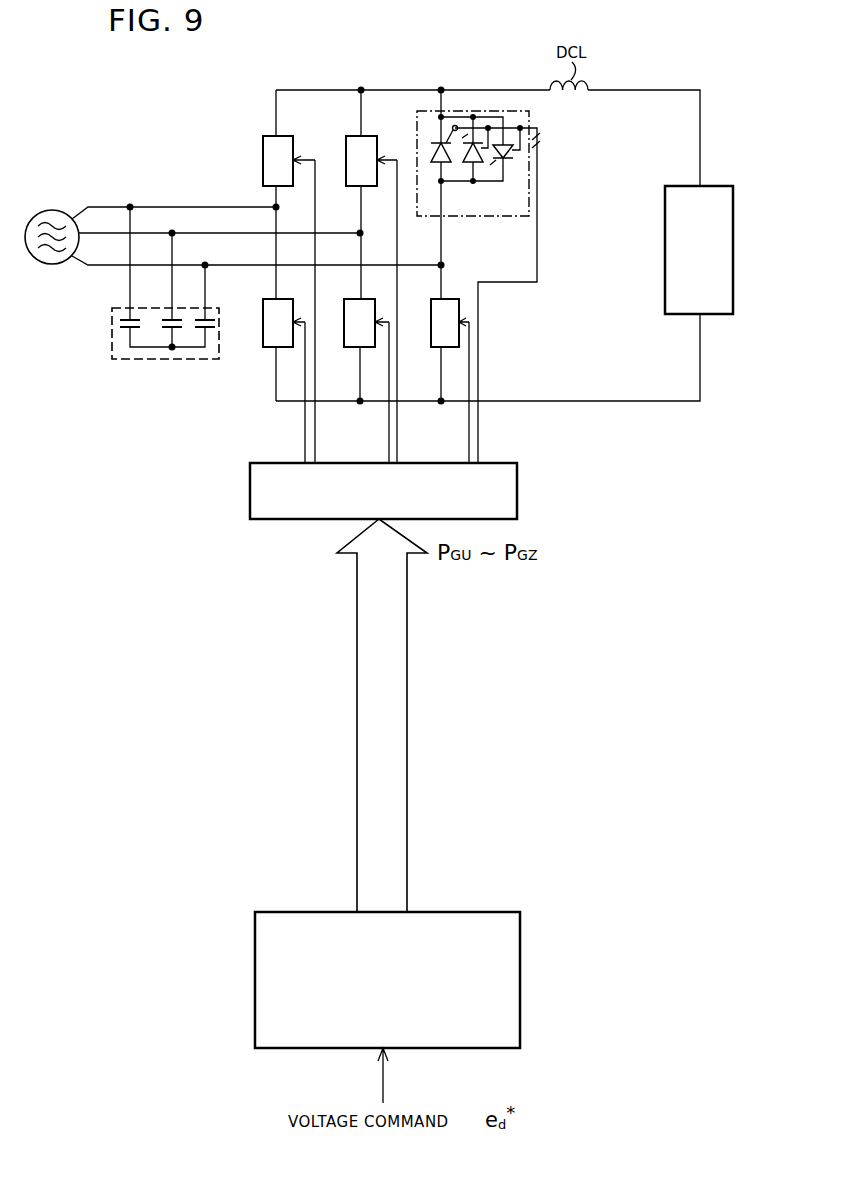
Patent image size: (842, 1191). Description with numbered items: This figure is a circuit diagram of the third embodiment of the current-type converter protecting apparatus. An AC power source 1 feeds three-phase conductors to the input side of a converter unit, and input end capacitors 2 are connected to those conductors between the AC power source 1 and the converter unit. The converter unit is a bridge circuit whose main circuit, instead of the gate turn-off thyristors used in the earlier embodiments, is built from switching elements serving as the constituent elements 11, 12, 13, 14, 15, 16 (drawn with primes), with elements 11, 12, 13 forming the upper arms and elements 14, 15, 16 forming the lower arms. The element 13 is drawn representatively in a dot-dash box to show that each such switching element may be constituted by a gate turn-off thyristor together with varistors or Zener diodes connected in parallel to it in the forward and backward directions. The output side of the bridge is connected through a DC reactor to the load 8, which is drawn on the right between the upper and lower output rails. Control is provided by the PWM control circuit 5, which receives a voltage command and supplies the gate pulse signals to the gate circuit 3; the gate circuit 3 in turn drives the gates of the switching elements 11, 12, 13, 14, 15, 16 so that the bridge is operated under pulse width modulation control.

The AC power source 1 is at (52, 210).
The input end capacitors 2 is at (146, 360).
The gate circuit 3 is at (250, 496).
The PWM control circuit 5 is at (520, 972).
The load 8 is at (665, 255).
The switching element 11 is at (263, 141).
The switching element 12 is at (348, 137).
The switching element 13 is at (417, 136).
The switching element 14 is at (268, 348).
The switching element 15 is at (350, 348).
The switching element 16 is at (436, 348).